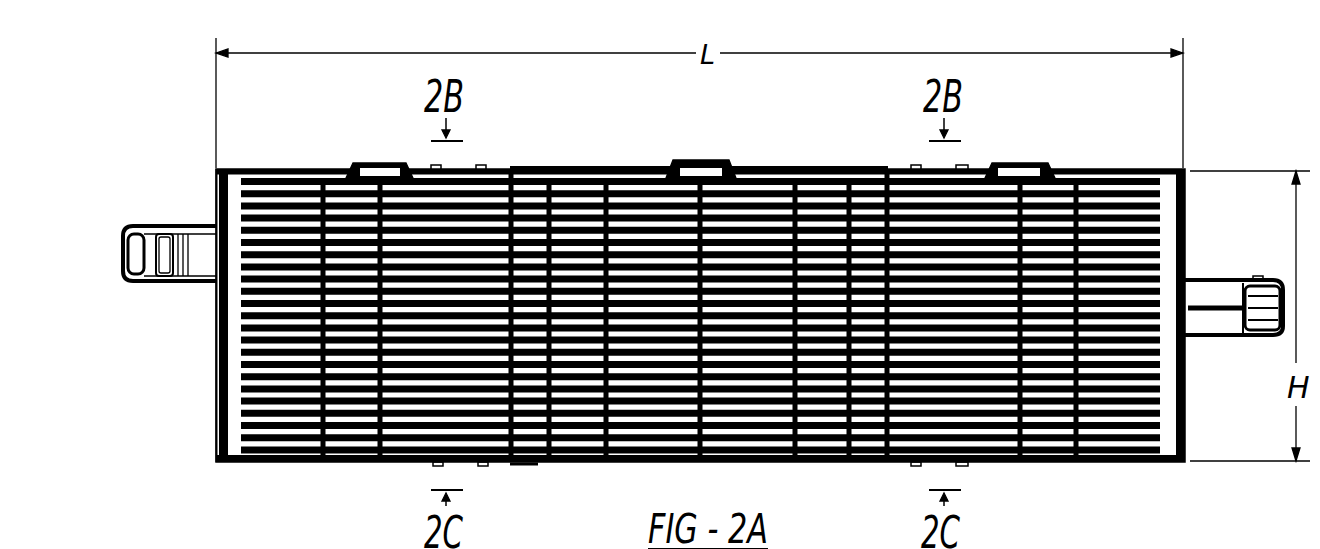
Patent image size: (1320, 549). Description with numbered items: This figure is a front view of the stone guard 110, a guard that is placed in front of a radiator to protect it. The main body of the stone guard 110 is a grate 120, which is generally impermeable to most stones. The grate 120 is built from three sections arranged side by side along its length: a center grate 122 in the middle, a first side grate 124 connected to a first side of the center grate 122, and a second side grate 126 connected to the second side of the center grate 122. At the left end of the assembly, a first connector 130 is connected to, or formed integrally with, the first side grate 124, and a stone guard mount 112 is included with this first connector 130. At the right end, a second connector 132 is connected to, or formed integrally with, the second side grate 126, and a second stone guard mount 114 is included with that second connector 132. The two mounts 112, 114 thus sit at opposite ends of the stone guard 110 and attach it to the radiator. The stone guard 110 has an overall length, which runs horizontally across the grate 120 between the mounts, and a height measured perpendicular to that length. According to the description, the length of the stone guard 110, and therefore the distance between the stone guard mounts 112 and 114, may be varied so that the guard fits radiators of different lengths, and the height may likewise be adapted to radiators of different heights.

The stone guard 110 is at (1222, 113).
The stone guard mount 112 is at (132, 275).
The stone guard mount 114 is at (1238, 277).
The grate 120 is at (843, 160).
The center grate 122 is at (565, 197).
The first side grate 124 is at (280, 178).
The second side grate 126 is at (1115, 163).
The first connector 130 is at (223, 442).
The second connector 132 is at (1162, 445).